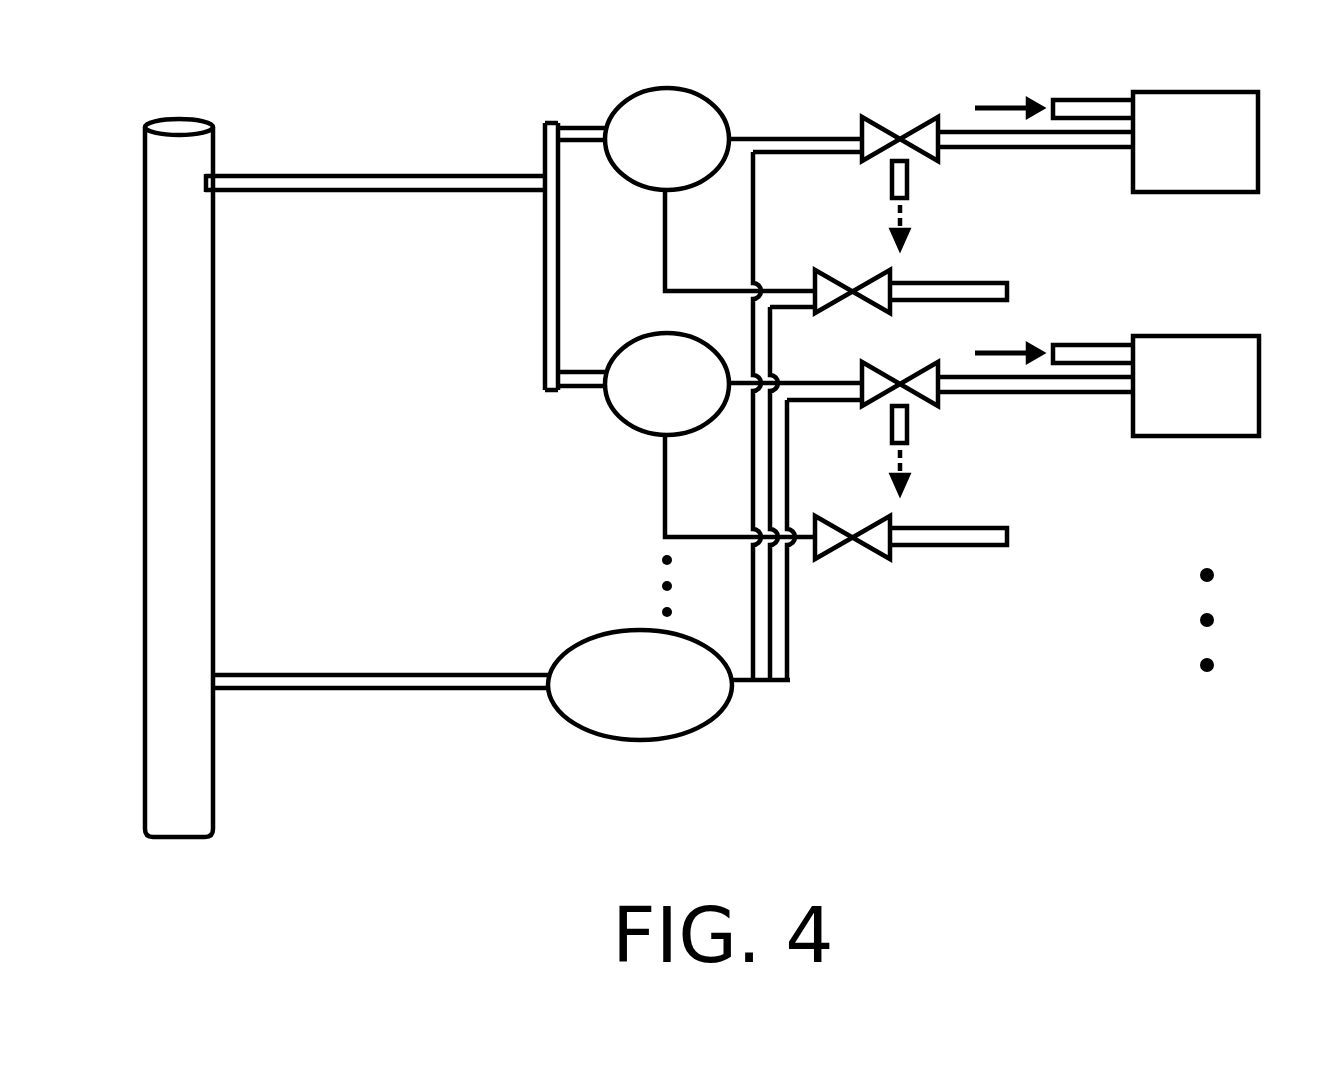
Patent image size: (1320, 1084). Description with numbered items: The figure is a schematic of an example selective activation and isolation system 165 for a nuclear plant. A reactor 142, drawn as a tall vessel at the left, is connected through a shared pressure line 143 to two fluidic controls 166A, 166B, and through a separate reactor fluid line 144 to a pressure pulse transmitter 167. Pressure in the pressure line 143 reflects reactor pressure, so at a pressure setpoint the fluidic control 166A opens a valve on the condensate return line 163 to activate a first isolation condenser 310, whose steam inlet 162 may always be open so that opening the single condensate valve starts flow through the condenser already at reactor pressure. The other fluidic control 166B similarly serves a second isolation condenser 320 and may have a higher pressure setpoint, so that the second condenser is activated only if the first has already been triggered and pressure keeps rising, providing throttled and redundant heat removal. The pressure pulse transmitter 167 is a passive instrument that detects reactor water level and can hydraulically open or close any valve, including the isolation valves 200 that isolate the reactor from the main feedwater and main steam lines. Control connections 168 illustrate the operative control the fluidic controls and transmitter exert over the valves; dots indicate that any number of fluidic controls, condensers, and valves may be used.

The reactor 142 is at (213, 508).
The shared pressure line 143 is at (323, 193).
The reactor fluid line 144 is at (450, 673).
The steam inlet 162 is at (1078, 100).
The condensate return line 163 is at (888, 182).
The selective activation and isolation system 165 is at (871, 481).
The fluidic control 166A is at (617, 108).
The fluidic control 166B is at (632, 422).
The pressure pulse transmitter 167 is at (572, 738).
The control connections 168 is at (668, 233).
The isolation valve 200 is at (850, 314).
The isolation condenser 310 is at (1213, 193).
The isolation condenser 320 is at (1225, 438).